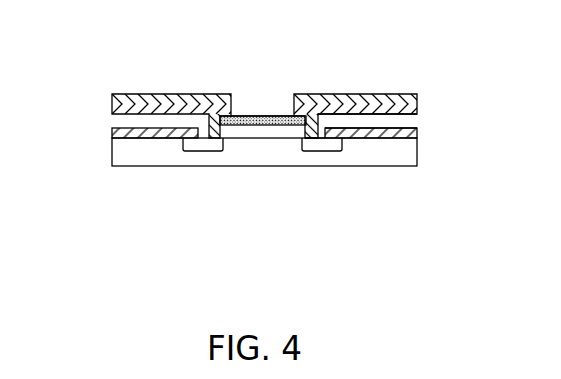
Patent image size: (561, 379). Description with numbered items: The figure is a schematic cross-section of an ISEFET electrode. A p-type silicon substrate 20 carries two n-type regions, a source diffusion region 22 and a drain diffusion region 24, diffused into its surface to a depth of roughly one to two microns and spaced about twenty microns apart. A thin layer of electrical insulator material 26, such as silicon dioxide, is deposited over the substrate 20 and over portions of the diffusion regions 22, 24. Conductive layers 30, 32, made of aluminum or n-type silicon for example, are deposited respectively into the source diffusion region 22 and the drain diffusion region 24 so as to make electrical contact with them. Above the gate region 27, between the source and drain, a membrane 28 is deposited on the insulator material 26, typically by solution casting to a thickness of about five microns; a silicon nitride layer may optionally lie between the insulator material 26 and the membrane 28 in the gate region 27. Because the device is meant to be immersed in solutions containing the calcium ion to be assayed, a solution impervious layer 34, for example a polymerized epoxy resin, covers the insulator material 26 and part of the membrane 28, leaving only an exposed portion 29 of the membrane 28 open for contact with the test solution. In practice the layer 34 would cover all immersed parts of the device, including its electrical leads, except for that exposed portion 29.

The p-type silicon substrate 20 is at (218, 157).
The source diffusion region 22 is at (197, 144).
The drain diffusion region 24 is at (321, 145).
The electrical insulator material 26 is at (418, 108).
The gate region 27 is at (295, 139).
The membrane 28 is at (257, 118).
The exposed portion of the membrane 29 is at (250, 116).
The conductive layer 30 is at (112, 119).
The conductive layer 32 is at (407, 121).
The solution impervious layer 34 is at (340, 94).